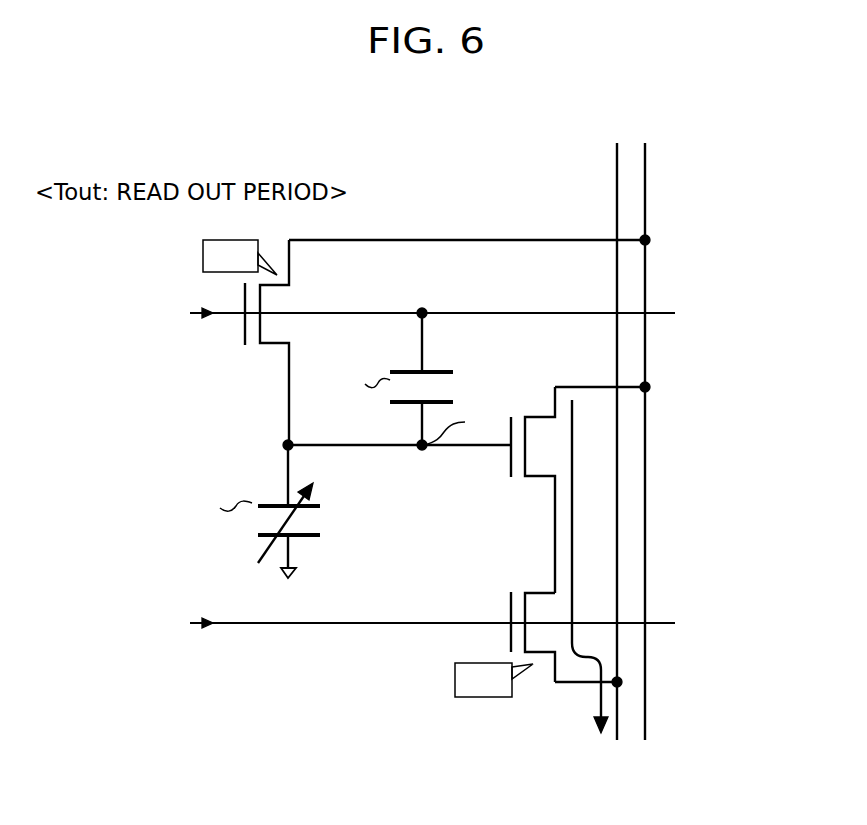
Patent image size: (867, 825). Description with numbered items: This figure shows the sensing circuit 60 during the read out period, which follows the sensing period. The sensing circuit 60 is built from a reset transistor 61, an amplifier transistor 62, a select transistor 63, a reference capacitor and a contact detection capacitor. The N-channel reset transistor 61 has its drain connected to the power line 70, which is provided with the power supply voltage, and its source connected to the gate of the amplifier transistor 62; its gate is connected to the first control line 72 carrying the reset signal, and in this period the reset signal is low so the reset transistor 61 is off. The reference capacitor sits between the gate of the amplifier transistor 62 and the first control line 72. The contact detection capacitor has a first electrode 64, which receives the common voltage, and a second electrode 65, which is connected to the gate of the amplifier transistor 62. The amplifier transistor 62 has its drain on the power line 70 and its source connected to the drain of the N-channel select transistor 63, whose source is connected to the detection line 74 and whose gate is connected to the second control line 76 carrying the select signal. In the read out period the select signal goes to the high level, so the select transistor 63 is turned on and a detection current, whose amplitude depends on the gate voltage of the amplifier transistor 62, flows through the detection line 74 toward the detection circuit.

The sensing circuit 60 is at (731, 199).
The reset transistor 61 is at (230, 335).
The amplifier transistor 62 is at (502, 463).
The select transistor 63 is at (502, 603).
The first electrode 64 is at (258, 548).
The second electrode 65 is at (267, 502).
The power line 70 is at (645, 198).
The first control line 72 is at (660, 309).
The detection line 74 is at (617, 198).
The second control line 76 is at (658, 621).